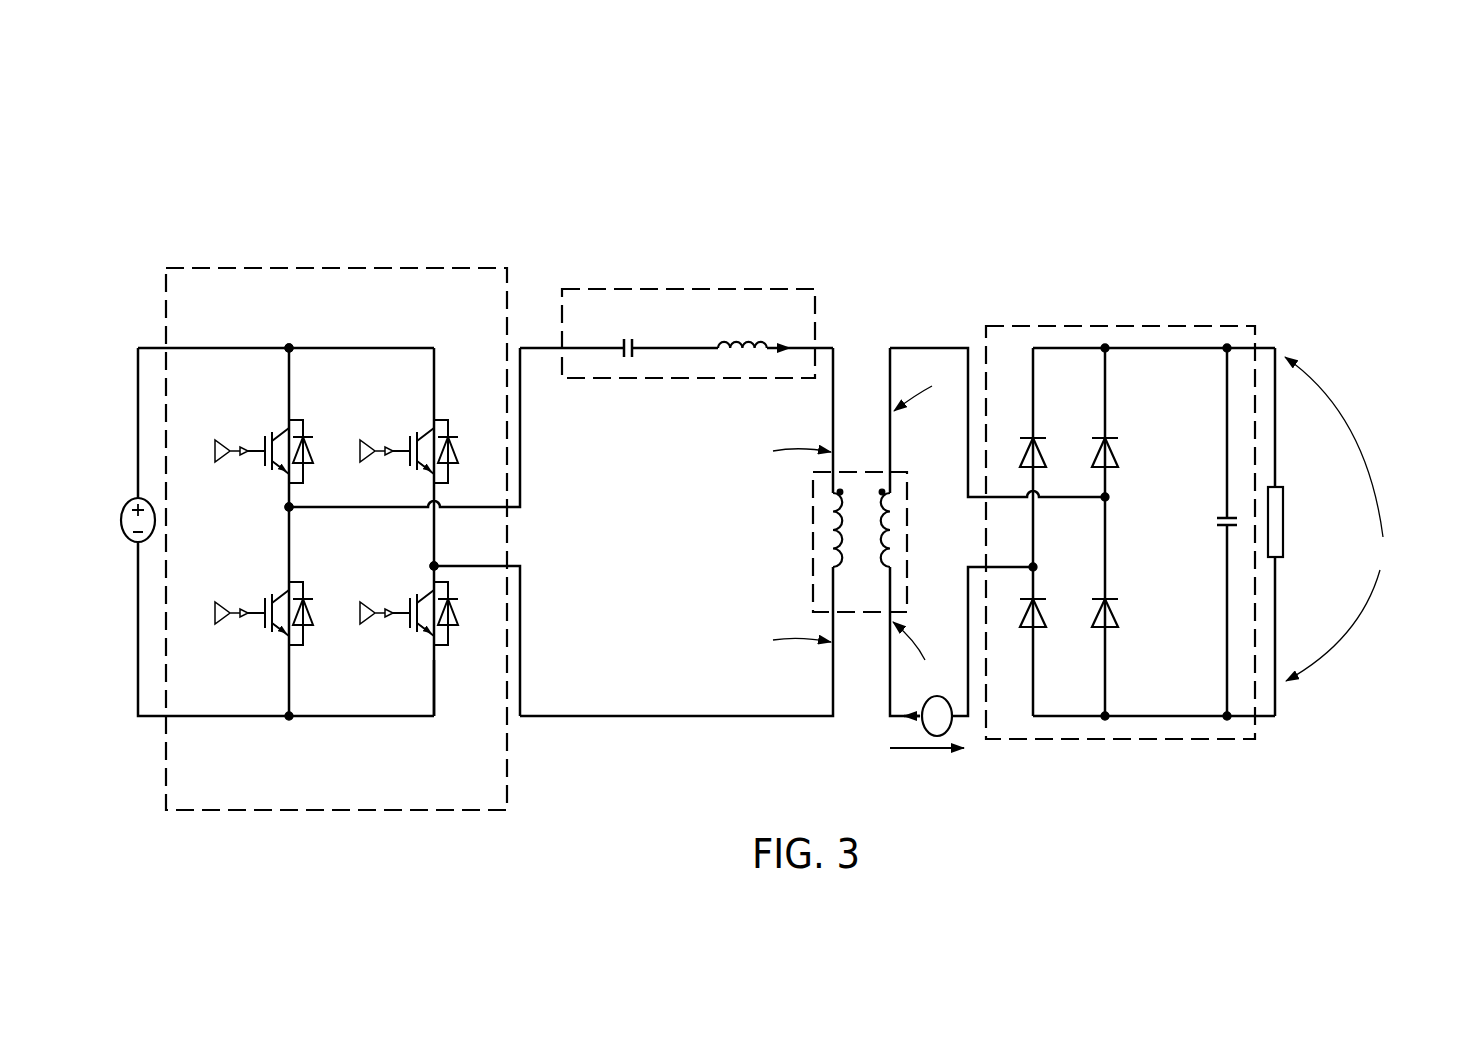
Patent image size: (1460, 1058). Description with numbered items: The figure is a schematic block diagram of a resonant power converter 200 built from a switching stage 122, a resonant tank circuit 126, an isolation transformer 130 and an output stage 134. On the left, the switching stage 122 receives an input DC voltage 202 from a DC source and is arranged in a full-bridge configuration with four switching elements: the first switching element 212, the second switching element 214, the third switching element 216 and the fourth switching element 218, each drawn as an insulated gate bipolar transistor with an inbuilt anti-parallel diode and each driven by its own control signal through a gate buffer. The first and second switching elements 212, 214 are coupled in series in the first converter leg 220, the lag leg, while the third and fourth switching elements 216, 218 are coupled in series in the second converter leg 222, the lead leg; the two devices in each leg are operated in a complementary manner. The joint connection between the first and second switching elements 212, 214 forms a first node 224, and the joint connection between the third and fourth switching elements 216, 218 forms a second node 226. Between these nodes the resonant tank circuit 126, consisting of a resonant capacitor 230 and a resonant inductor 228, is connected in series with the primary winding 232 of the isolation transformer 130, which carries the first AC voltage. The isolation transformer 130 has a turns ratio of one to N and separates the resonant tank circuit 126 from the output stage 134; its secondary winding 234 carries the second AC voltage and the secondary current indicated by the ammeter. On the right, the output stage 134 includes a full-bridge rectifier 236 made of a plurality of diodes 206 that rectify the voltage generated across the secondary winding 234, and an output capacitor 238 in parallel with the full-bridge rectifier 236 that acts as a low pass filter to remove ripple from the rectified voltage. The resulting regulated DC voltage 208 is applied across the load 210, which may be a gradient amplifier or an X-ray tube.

The resonant power converter 200 is at (982, 183).
The switching stage 122 is at (263, 258).
The input DC voltage 202 is at (124, 505).
The first switching element 212 is at (265, 440).
The third switching element 216 is at (410, 440).
The second switching element 214 is at (265, 634).
The fourth switching element 218 is at (410, 625).
The first converter leg 220 is at (286, 368).
The second converter leg 222 is at (438, 667).
The first node 224 is at (286, 508).
The second node 226 is at (432, 563).
The resonant tank circuit 126 is at (677, 287).
The resonant capacitor 230 is at (627, 358).
The resonant inductor 228 is at (736, 355).
The isolation transformer 130 is at (812, 566).
The primary winding 232 is at (828, 543).
The secondary winding 234 is at (896, 520).
The output stage 134 is at (1058, 318).
The full-bridge rectifier 236 is at (1069, 346).
The diodes 206 is at (1040, 440).
The output capacitor 238 is at (1222, 517).
The load 210 is at (1284, 487).
The regulated DC voltage 208 is at (1409, 562).